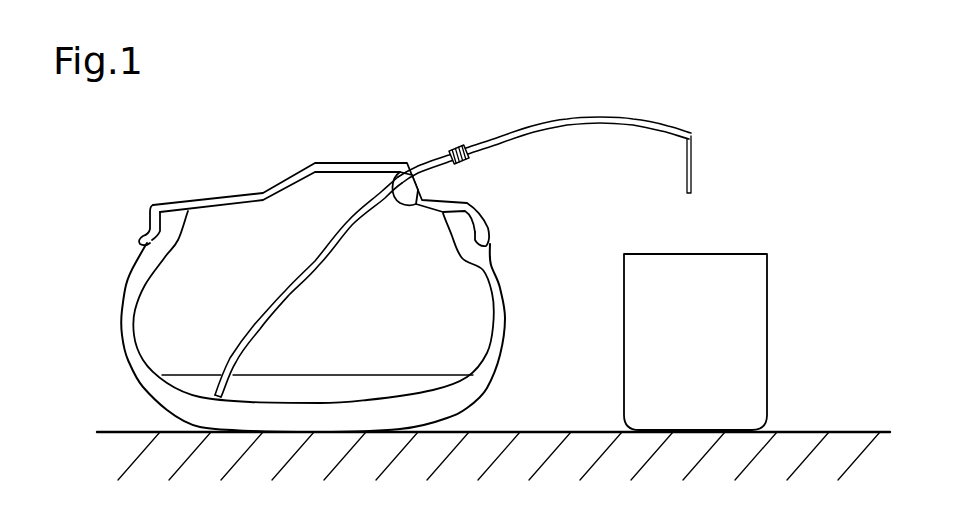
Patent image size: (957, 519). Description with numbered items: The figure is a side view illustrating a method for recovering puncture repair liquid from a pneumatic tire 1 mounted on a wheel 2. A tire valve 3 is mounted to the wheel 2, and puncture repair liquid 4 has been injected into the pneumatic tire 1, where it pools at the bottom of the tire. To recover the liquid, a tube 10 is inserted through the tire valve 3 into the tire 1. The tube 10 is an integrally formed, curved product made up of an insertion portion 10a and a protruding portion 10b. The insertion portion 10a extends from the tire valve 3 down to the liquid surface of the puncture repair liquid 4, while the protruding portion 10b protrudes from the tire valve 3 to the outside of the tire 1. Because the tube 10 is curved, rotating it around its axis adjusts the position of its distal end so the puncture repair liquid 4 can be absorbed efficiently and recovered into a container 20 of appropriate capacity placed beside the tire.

The pneumatic tire 1 is at (282, 259).
The wheel 2 is at (296, 180).
The tire valve 3 is at (435, 168).
The puncture repair liquid 4 is at (365, 388).
The tube 10 is at (453, 218).
The insertion portion 10a is at (284, 300).
The protruding portion 10b is at (627, 123).
The container 20 is at (753, 335).